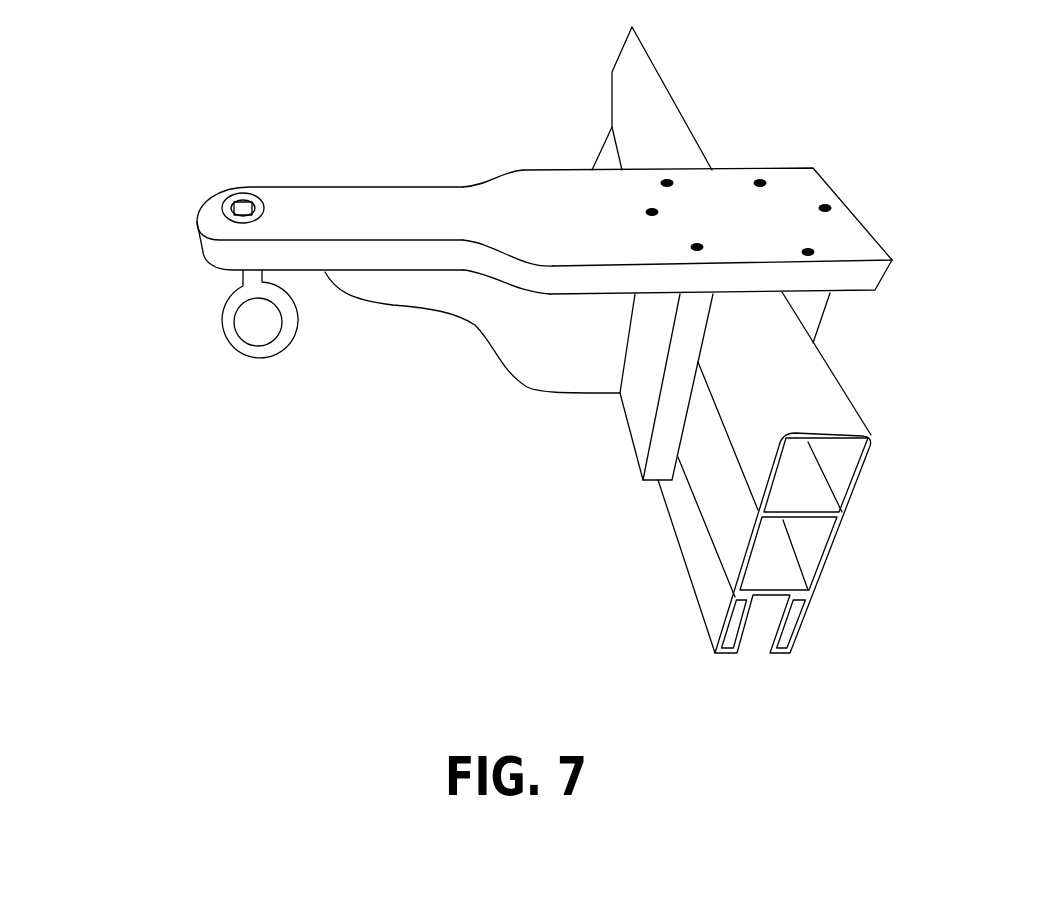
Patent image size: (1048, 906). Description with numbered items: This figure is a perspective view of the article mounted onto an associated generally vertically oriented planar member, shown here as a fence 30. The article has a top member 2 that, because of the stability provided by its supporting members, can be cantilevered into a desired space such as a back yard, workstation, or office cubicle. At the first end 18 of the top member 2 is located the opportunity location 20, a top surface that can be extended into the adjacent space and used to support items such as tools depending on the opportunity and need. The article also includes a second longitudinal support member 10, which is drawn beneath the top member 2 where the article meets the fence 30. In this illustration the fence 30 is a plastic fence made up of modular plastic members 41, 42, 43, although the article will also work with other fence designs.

The top member 2 is at (815, 198).
The second longitudinal support member 10 is at (562, 353).
The first end 18 is at (203, 213).
The opportunity location 20 is at (290, 210).
The fence 30 is at (672, 157).
The modular plastic member 41 is at (843, 425).
The modular plastic member 42 is at (778, 582).
The modular plastic member 43 is at (788, 627).